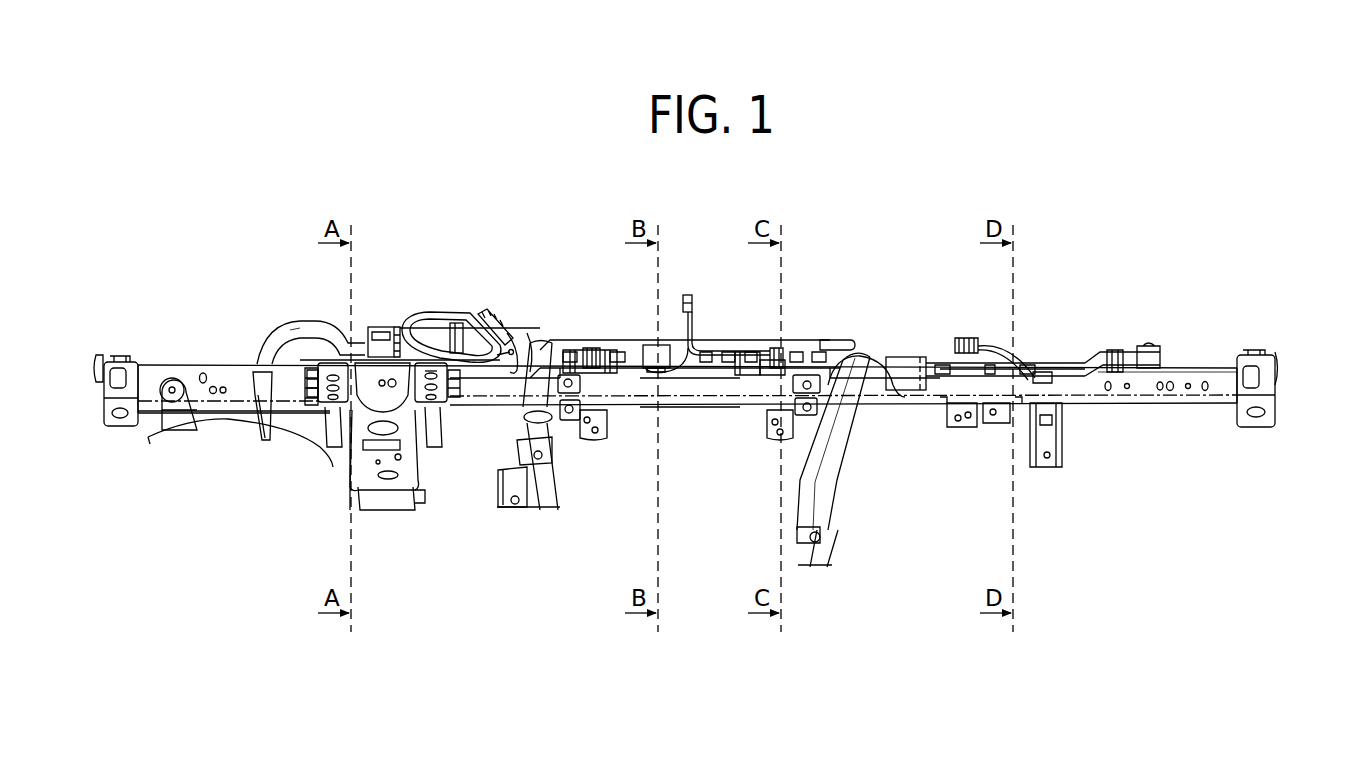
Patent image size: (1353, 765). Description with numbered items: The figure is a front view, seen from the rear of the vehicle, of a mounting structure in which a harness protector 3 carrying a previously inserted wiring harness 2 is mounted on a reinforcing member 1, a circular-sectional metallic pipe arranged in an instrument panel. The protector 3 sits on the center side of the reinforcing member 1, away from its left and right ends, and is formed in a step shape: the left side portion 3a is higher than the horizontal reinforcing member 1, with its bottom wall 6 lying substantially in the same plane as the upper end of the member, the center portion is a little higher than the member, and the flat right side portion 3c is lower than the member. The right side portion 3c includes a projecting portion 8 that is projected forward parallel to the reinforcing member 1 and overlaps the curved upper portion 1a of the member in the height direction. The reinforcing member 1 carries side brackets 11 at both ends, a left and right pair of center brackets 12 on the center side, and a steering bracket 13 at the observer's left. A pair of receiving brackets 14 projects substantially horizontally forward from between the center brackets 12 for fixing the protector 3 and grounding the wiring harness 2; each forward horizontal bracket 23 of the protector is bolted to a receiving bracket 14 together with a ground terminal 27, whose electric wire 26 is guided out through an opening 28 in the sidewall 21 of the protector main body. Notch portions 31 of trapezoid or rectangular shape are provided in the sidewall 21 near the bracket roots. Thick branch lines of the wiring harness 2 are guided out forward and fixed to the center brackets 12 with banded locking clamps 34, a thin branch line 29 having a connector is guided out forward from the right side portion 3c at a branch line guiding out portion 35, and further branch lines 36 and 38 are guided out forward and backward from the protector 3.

The reinforcing member 1 is at (232, 372).
The curved upper portion 1a is at (1178, 368).
The wiring harness 2 is at (328, 322).
The harness protector 3 is at (737, 336).
The left side portion 3a is at (393, 322).
The right side portion 3c is at (1053, 360).
The bottom wall 6 is at (498, 374).
The projecting portion 8 is at (1000, 362).
The side brackets 11 is at (103, 420).
The center brackets 12 is at (550, 490).
The steering bracket 13 is at (408, 462).
The receiving brackets 14 is at (603, 380).
The sidewall 21 is at (695, 393).
The bracket 23 is at (593, 348).
The electric wire 26 is at (690, 333).
The ground terminal 27 is at (687, 295).
The opening 28 is at (773, 350).
The branch line 29 is at (1035, 350).
The notch portions 31 is at (603, 373).
The locking clamps 34 is at (823, 533).
The branch line guiding out portion 35 is at (1040, 378).
The branch lines 36 is at (448, 315).
The branch lines 38 is at (888, 393).